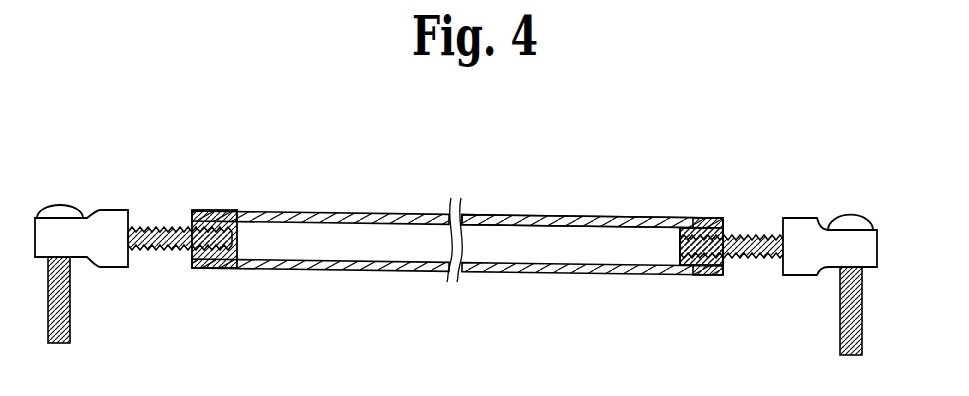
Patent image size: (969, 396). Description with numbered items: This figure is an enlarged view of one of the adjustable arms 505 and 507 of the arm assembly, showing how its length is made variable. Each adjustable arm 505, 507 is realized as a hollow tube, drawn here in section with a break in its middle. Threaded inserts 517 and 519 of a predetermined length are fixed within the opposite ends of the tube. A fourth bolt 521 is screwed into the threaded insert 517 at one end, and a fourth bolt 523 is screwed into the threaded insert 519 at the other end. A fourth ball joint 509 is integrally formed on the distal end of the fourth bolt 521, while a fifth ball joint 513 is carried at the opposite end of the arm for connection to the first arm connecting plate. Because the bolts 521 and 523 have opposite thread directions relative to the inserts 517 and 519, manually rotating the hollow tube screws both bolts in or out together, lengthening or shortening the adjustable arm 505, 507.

The adjustable arm 505 is at (350, 212).
The adjustable arm 507 is at (592, 221).
The fourth ball joint 509 is at (117, 211).
The fifth ball joint 513 is at (840, 217).
The threaded insert 517 is at (206, 210).
The threaded insert 519 is at (704, 220).
The fourth bolt 521 is at (168, 252).
The fourth bolt 523 is at (742, 261).